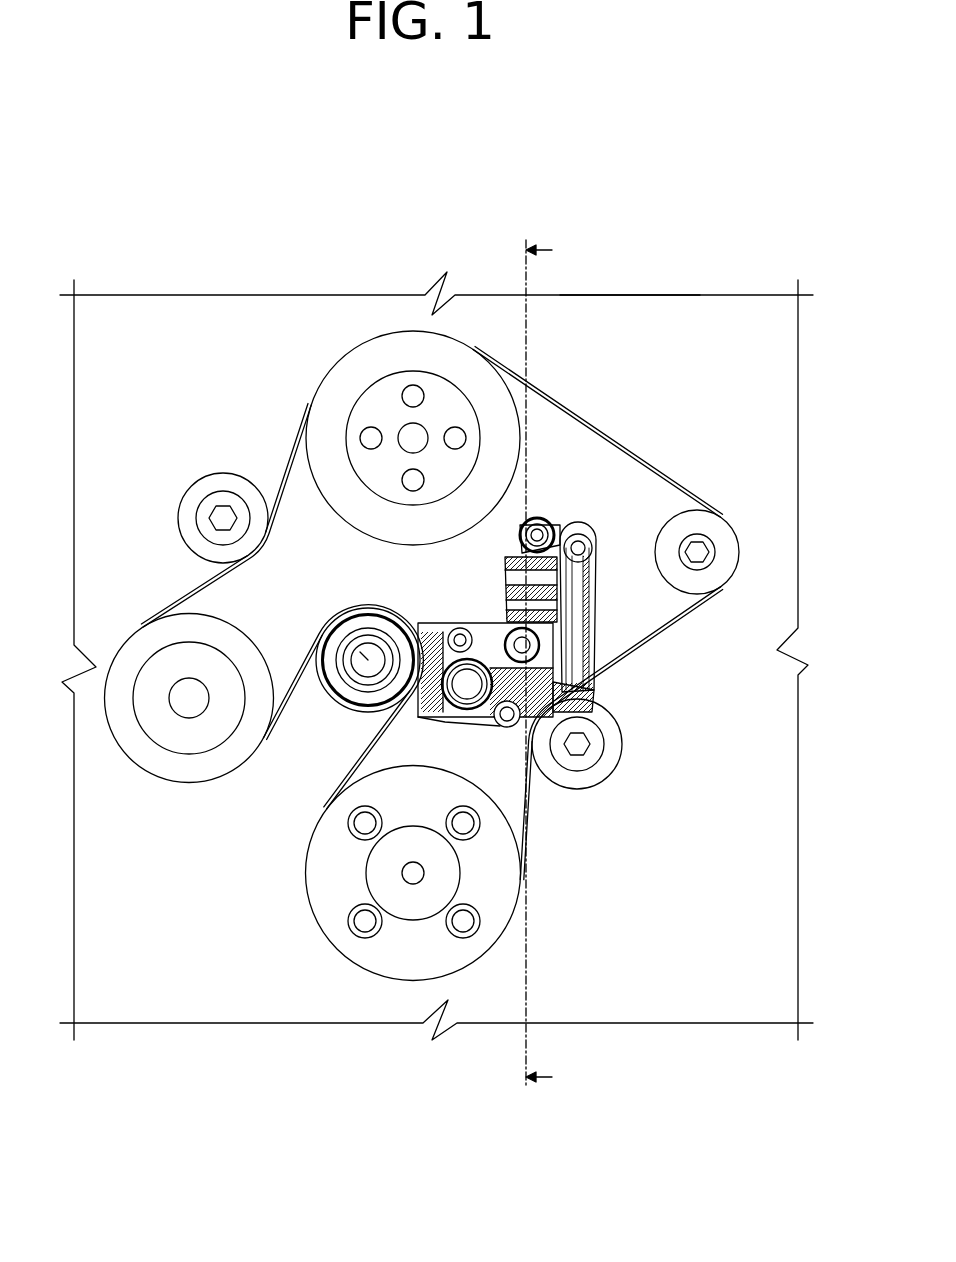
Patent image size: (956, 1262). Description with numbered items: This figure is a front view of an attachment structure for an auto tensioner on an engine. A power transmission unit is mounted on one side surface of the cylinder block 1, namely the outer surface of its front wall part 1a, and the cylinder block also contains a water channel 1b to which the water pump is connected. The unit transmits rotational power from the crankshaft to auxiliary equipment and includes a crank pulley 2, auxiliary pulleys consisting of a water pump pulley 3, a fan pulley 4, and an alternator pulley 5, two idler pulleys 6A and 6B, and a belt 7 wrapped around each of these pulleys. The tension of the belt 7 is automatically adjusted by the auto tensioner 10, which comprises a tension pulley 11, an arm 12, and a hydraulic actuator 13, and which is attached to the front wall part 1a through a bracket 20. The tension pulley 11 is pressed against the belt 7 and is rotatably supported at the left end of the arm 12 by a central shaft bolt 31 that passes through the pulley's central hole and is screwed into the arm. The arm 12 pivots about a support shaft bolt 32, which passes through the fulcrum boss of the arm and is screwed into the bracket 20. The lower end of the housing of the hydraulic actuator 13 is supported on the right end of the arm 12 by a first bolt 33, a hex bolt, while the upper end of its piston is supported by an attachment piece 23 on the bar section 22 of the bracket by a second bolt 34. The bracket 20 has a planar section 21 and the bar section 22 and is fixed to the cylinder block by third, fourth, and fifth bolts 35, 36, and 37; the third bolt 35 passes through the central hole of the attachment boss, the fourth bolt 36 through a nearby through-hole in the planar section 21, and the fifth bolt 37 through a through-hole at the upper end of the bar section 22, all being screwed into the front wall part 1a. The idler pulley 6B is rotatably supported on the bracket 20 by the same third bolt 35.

The cylinder block 1 is at (170, 282).
The front wall part 1a is at (635, 292).
The water channel 1b is at (718, 312).
The crank pulley 2 is at (320, 928).
The water pump pulley 3 is at (160, 782).
The fan pulley 4 is at (360, 338).
The alternator pulley 5 is at (728, 522).
The idler pulley 6A is at (212, 470).
The idler pulley 6B is at (624, 772).
The belt 7 is at (583, 416).
The auto tensioner 10 is at (425, 585).
The tension pulley 11 is at (335, 702).
The arm 12 is at (415, 610).
The hydraulic actuator 13 is at (500, 572).
The bracket 20 is at (600, 682).
The planar section 21 is at (468, 718).
The bar section 22 is at (594, 618).
The attachment piece 23 is at (566, 526).
The central shaft bolt 31 is at (345, 645).
The support shaft bolt 32 is at (432, 706).
The first bolt 33 is at (488, 632).
The second bolt 34 is at (539, 516).
The third bolt 35 is at (579, 752).
The fourth bolt 36 is at (512, 728).
The fifth bolt 37 is at (592, 548).